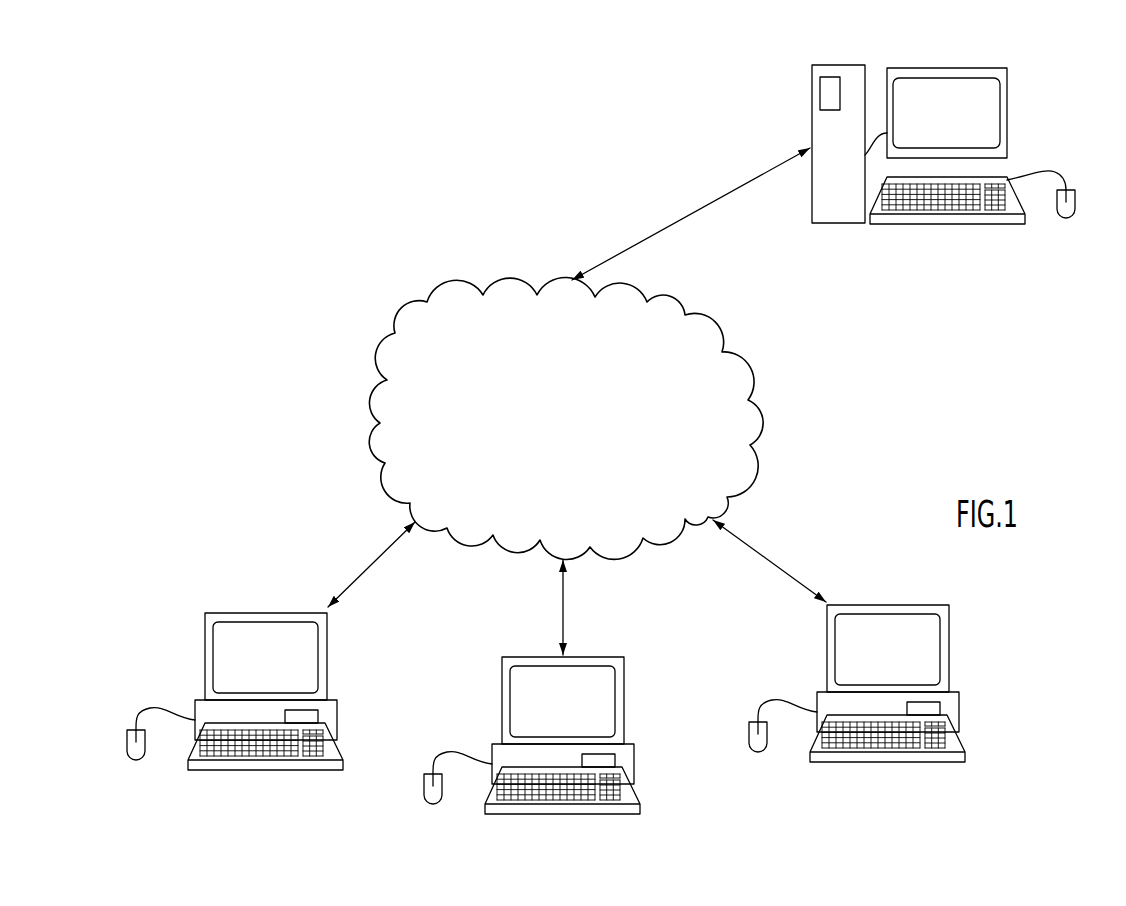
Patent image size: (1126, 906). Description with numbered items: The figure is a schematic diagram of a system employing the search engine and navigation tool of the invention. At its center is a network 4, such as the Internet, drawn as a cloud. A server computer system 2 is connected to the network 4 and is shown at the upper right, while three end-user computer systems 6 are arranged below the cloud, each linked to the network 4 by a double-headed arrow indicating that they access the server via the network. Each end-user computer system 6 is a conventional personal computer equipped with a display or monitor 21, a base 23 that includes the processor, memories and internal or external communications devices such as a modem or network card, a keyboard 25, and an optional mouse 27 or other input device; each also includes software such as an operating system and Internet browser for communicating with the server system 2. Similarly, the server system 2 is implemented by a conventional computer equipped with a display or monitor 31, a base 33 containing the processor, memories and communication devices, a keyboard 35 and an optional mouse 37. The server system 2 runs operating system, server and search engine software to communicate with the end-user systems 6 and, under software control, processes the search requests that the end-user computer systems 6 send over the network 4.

The server computer system 2 is at (760, 92).
The network 4 is at (755, 430).
The end-user computer systems 6 is at (580, 720).
The display or monitor 21 is at (257, 613).
The base 23 is at (333, 700).
The keyboard 25 is at (260, 770).
The mouse 27 is at (127, 742).
The display or monitor 31 is at (1007, 110).
The base 33 is at (832, 65).
The keyboard 35 is at (975, 223).
The mouse 37 is at (1075, 203).